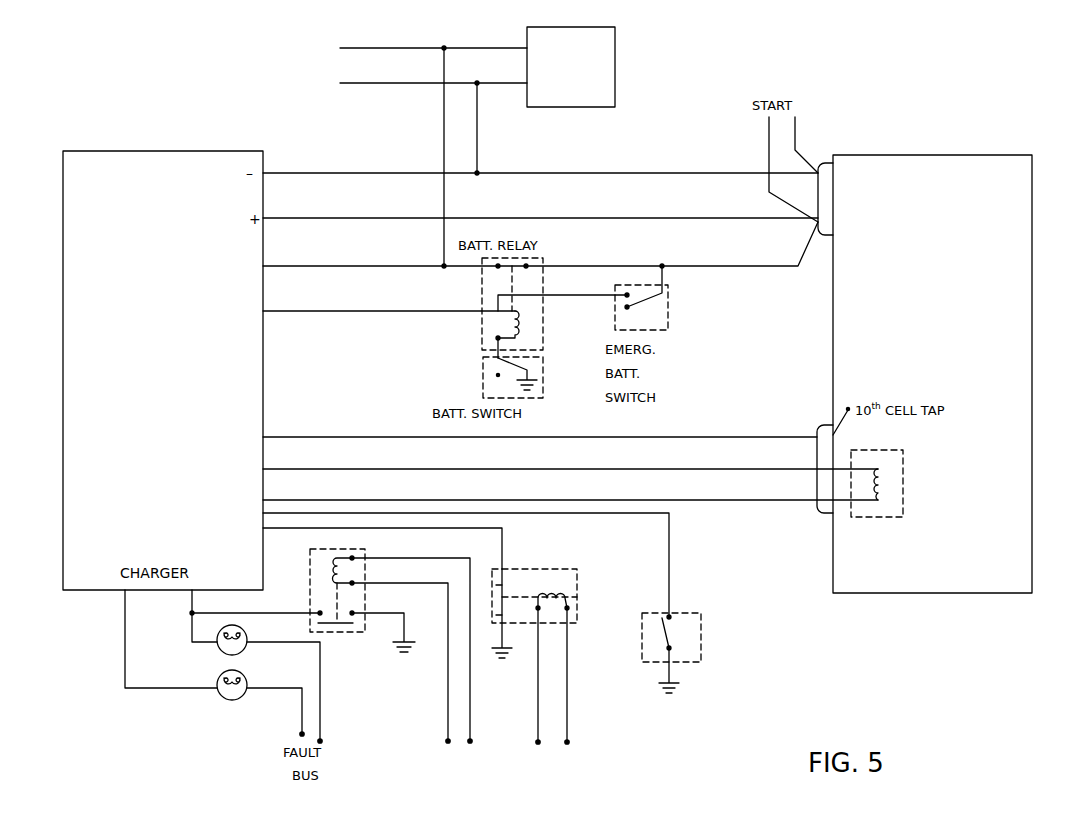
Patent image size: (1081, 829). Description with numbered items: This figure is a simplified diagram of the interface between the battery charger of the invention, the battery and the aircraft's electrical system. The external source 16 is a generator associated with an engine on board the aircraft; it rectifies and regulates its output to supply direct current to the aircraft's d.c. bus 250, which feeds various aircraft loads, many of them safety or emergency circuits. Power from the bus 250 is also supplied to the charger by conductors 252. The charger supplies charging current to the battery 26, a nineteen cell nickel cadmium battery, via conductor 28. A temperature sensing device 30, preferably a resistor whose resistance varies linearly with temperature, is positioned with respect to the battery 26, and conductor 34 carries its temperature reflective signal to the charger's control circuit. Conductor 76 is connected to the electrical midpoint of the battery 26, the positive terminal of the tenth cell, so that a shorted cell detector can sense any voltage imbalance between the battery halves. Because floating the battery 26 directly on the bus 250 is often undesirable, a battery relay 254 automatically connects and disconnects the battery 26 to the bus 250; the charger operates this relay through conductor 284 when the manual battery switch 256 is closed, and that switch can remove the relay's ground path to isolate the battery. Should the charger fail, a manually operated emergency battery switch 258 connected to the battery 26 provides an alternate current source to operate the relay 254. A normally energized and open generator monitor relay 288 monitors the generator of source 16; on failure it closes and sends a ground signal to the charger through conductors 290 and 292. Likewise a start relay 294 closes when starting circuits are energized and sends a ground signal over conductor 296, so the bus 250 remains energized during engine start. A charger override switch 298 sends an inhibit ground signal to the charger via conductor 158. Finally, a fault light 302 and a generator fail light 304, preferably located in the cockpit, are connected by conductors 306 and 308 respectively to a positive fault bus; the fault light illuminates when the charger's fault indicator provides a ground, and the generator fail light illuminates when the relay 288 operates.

The external source 16 is at (578, 101).
The battery 26 is at (938, 378).
The conductor 28 is at (291, 218).
The temperature sensing device 30 is at (903, 498).
The conductor 34 is at (673, 469).
The conductor 76 is at (683, 437).
The conductor 158 is at (669, 590).
The d.c. bus 250 is at (398, 42).
The conductors 252 is at (440, 108).
The battery relay 254 is at (482, 300).
The manual battery switch 256 is at (483, 381).
The emergency battery switch 258 is at (672, 300).
The conductor 284 is at (287, 311).
The generator monitor relay 288 is at (365, 610).
The conductor 290 is at (212, 612).
The conductor 292 is at (192, 598).
The start relay 294 is at (577, 590).
The conductor 296 is at (455, 530).
The charger override switch 298 is at (701, 645).
The fault light 302 is at (243, 695).
The generator fail light 304 is at (243, 649).
The conductor 306 is at (302, 731).
The conductor 308 is at (320, 722).